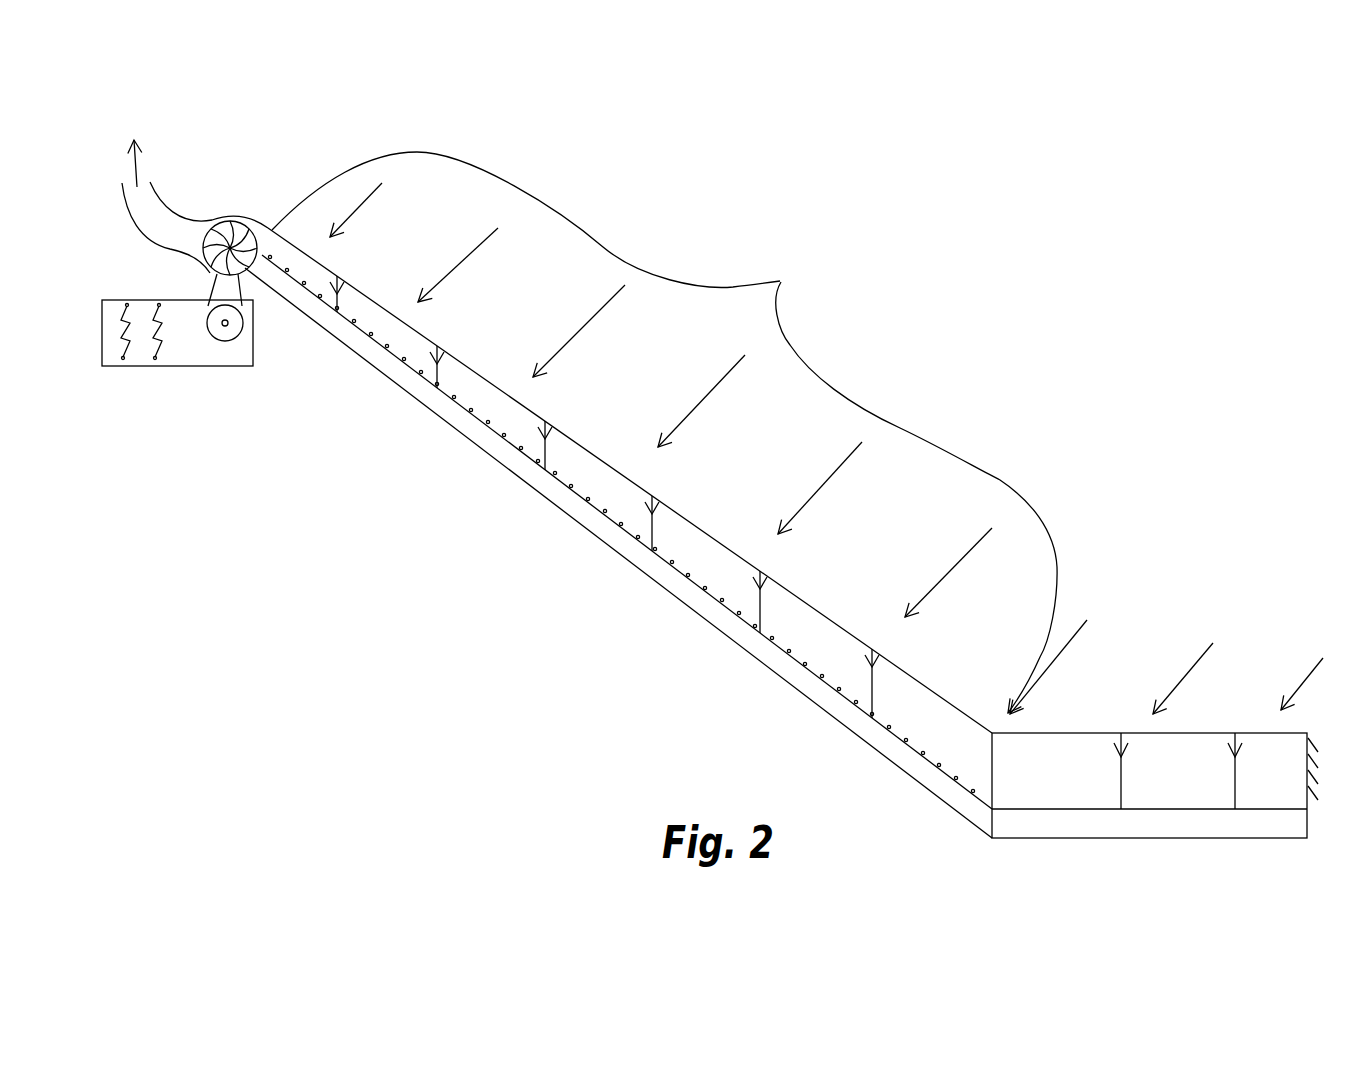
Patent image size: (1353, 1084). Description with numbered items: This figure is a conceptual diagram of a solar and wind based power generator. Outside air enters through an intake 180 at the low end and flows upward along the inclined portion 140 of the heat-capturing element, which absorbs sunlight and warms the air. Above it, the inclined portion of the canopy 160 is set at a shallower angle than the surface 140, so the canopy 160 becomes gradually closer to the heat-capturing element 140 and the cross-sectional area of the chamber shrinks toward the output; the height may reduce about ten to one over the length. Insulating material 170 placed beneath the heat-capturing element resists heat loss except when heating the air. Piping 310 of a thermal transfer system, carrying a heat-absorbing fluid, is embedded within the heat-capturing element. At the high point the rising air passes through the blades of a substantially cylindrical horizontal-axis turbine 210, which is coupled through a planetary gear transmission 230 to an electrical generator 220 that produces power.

The inclined portion of the heat-capturing element 140 is at (540, 494).
The inclined portion of the canopy 160 is at (797, 433).
The insulating material 170 is at (445, 428).
The intake opening 180 is at (1316, 729).
The turbine 210 is at (247, 204).
The electrical generator 220 is at (112, 383).
The planetary gear transmission 230 is at (225, 354).
The piping 310 is at (811, 683).